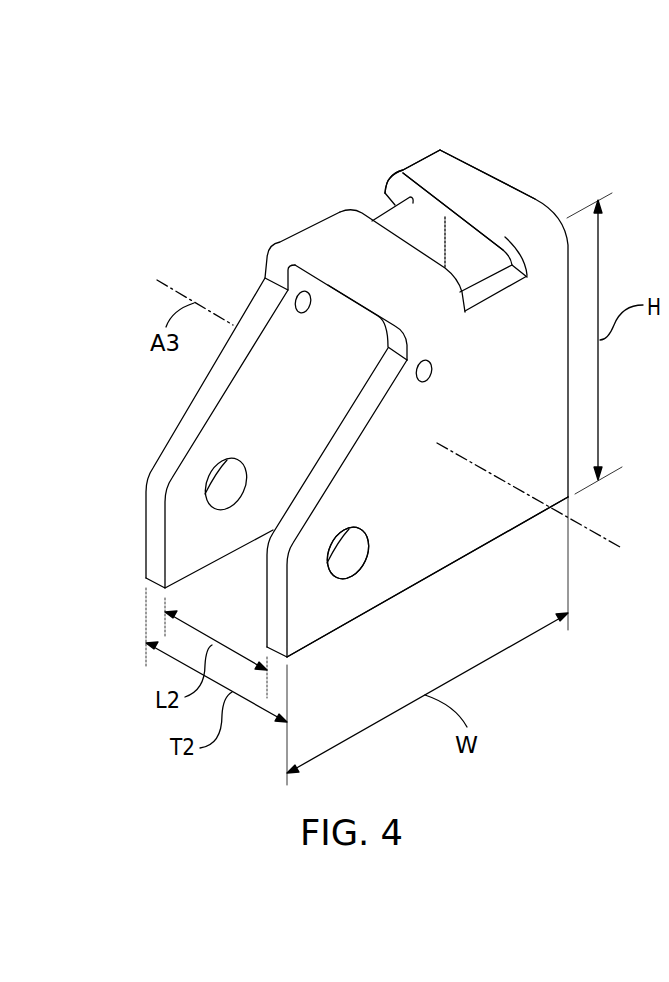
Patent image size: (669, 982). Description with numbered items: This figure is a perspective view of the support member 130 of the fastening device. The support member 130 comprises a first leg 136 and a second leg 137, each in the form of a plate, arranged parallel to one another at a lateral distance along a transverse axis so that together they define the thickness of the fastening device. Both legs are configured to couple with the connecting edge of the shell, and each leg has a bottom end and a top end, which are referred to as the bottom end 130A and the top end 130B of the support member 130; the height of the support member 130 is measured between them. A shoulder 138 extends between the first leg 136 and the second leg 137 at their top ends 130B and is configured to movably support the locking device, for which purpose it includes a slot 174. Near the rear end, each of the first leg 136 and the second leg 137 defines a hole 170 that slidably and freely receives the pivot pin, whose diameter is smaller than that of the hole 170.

The support member 130 is at (567, 139).
The bottom end 130A is at (522, 533).
The top end 130B is at (486, 141).
The first leg 136 is at (287, 624).
The second leg 137 is at (160, 471).
The shoulder 138 is at (330, 232).
The hole 170 is at (349, 562).
The slot 174 is at (378, 208).